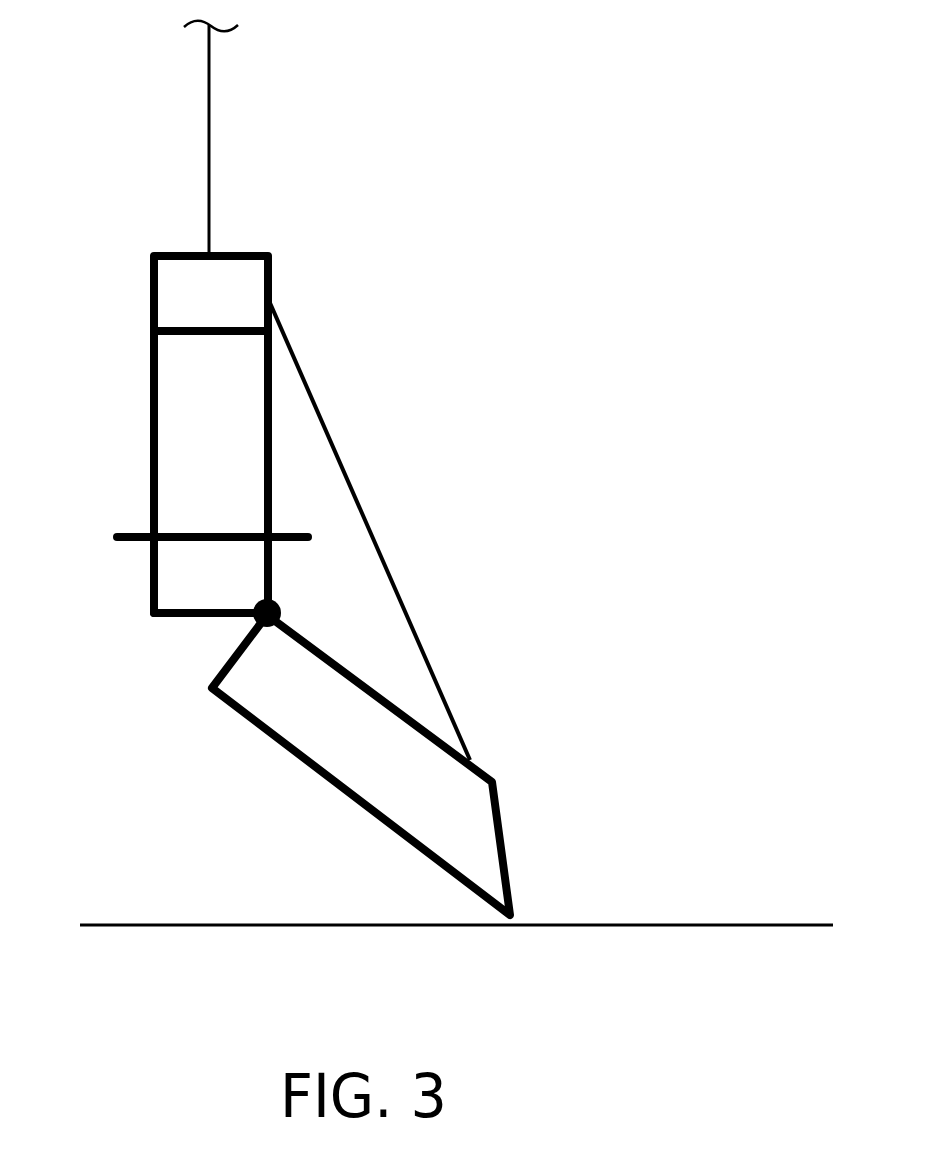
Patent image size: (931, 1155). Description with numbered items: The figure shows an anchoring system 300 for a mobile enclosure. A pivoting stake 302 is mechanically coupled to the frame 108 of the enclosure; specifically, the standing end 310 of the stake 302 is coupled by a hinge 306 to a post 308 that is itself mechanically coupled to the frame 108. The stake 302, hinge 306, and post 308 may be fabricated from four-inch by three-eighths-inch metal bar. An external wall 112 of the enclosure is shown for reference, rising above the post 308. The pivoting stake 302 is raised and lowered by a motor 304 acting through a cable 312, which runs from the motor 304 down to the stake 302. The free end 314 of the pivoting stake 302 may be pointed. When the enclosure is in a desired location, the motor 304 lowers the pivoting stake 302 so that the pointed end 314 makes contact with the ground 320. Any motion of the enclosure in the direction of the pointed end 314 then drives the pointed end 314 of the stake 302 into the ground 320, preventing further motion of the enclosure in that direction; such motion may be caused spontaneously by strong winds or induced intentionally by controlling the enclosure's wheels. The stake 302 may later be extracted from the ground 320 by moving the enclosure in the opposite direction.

The anchoring system 300 is at (576, 211).
The external wall 112 is at (210, 118).
The motor 304 is at (194, 317).
The post 308 is at (193, 584).
The frame 108 is at (117, 537).
The hinge 306 is at (280, 605).
The pivoting stake 302 is at (343, 754).
The cable 312 is at (386, 526).
The standing end 310 is at (211, 652).
The free end 314 is at (536, 900).
The ground 320 is at (136, 916).